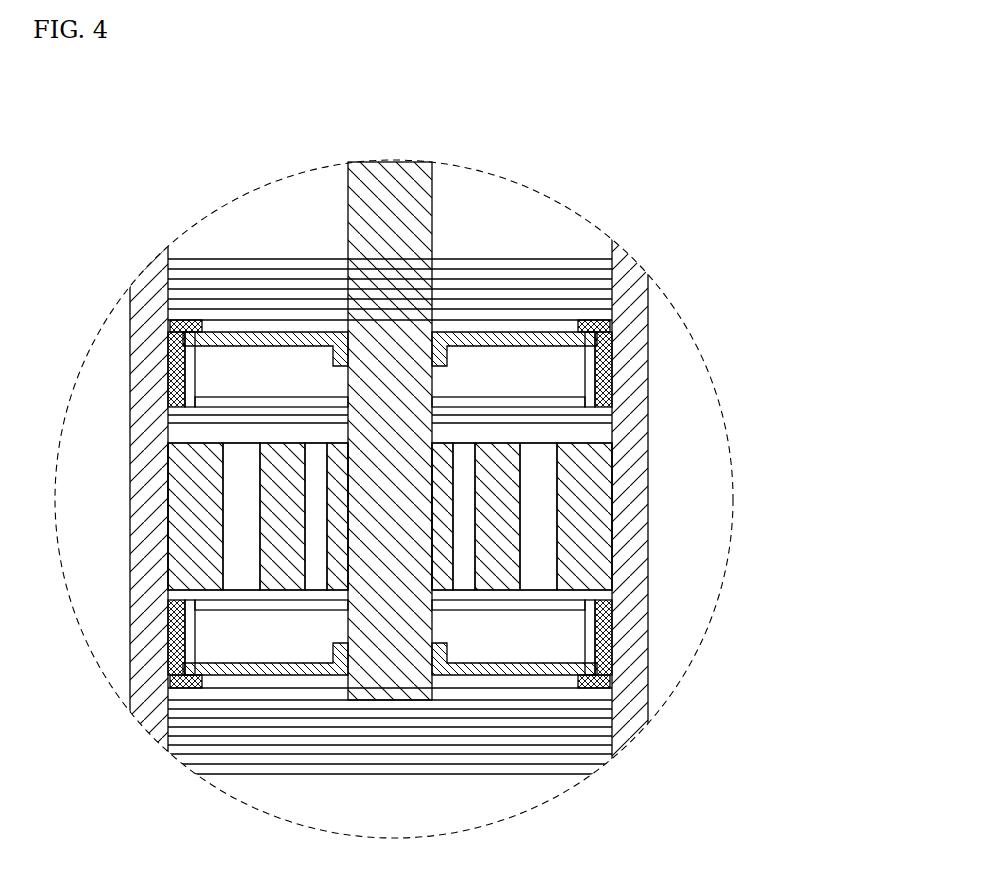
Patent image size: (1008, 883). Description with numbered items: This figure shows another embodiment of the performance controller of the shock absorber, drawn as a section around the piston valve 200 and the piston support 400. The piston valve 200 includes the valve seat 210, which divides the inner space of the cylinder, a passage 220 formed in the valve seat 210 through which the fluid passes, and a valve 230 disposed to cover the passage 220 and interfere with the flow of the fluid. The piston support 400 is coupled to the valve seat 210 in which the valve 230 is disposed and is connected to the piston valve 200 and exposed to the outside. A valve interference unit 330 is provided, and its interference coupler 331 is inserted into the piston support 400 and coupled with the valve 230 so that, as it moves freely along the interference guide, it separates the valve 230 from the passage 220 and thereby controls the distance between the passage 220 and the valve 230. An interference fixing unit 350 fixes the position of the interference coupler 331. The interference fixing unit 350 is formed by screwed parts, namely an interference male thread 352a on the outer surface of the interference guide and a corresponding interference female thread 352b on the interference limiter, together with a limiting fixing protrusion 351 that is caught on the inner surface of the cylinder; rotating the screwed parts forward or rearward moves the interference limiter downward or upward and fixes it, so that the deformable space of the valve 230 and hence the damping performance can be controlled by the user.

The piston valve 200 is at (510, 500).
The valve seat 210 is at (592, 468).
The passage 220 is at (527, 542).
The valve 230 is at (648, 377).
The valve interference unit 330 is at (583, 260).
The interference coupler 331 is at (515, 332).
The interference fixing unit 350 is at (512, 432).
The limiting fixing protrusion 351 is at (612, 293).
The interference male thread 352a is at (605, 320).
The interference female thread 352b is at (605, 340).
The piston support 400 is at (348, 162).